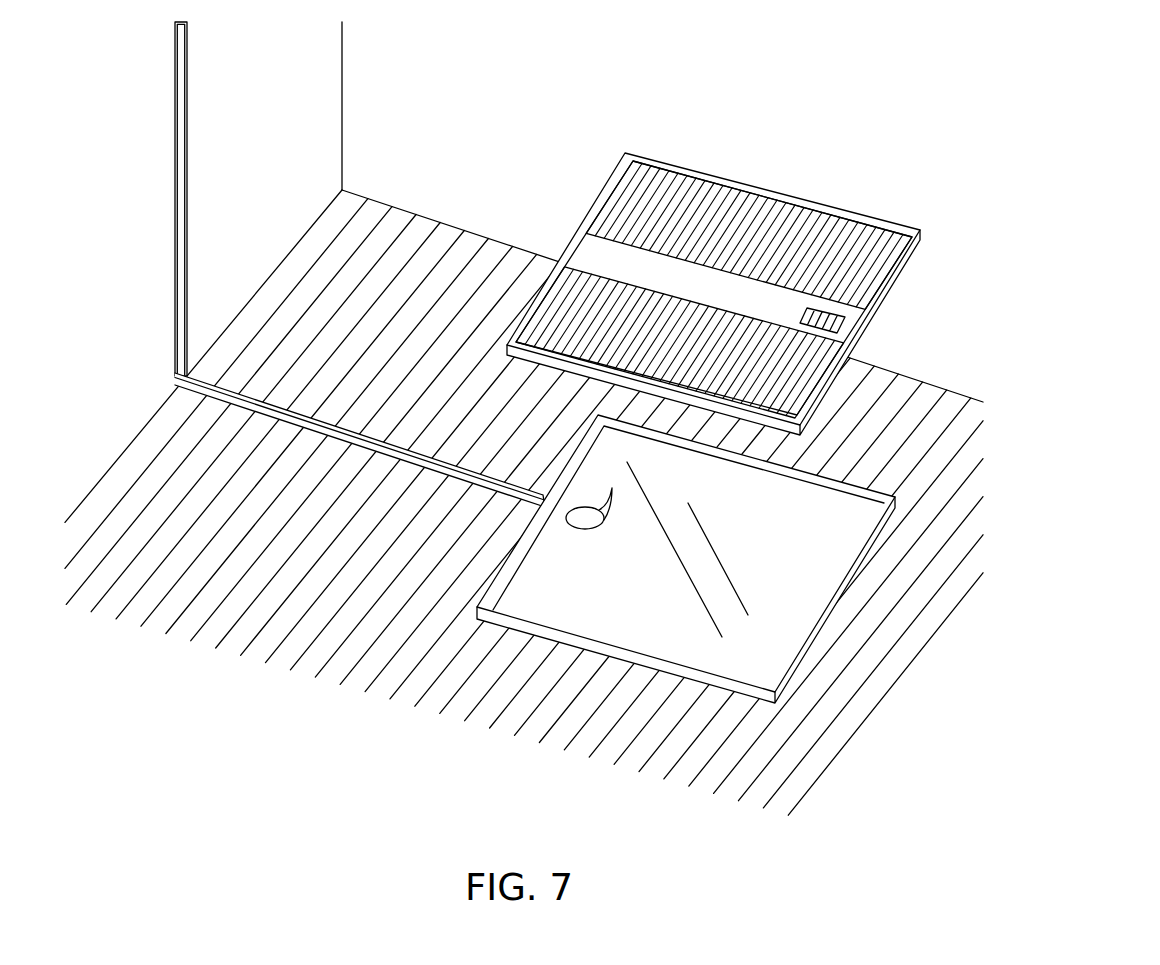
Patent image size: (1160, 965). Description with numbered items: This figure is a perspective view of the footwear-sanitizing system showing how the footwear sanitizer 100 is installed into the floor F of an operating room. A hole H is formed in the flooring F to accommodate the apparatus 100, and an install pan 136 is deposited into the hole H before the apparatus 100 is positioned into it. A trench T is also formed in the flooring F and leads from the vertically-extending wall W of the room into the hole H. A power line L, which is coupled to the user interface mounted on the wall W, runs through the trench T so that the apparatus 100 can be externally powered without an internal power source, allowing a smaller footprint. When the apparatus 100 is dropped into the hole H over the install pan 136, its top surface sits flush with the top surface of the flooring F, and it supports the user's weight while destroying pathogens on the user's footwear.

The footwear sanitizer 100 is at (838, 200).
The install pan 136 is at (595, 627).
The floor F is at (347, 248).
The wall W is at (112, 362).
The trench T is at (497, 477).
The power line L is at (470, 478).
The hole H is at (828, 482).